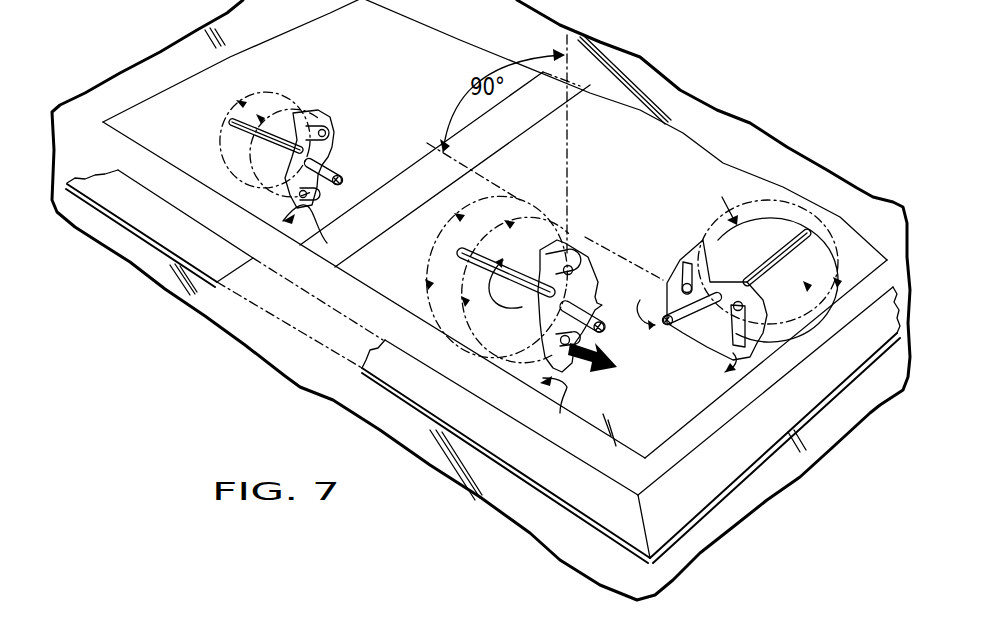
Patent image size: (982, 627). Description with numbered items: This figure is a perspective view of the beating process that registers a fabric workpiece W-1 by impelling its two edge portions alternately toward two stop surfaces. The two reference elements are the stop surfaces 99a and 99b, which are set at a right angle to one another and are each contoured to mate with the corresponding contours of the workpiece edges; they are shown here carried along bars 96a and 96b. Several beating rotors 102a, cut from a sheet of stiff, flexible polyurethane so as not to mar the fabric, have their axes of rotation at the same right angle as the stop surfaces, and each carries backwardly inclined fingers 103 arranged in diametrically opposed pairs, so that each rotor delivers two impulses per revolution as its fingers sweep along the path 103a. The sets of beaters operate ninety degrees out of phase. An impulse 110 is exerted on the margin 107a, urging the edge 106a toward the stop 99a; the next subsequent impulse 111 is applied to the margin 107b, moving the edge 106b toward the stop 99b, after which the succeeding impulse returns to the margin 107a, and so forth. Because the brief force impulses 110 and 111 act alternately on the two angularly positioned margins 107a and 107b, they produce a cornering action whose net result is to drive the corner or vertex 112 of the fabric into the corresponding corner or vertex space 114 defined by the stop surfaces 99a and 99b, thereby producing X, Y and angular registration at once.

The web W-1 is at (153, 122).
The guide bar 96a is at (519, 466).
The guide bar 96b is at (772, 431).
The stop surface 99a is at (530, 446).
The stop surface 99b is at (740, 410).
The beating rotor 102a is at (326, 128).
The finger 103 is at (803, 373).
The tool path 103a is at (705, 199).
The edge 106a is at (357, 282).
The edge 106b is at (634, 130).
The margin 107a is at (416, 258).
The margin 107b is at (852, 266).
The impulse 110 is at (425, 320).
The impulse 111 is at (686, 403).
The corner or vertex 112 is at (645, 458).
The corner or vertex space 114 is at (640, 490).